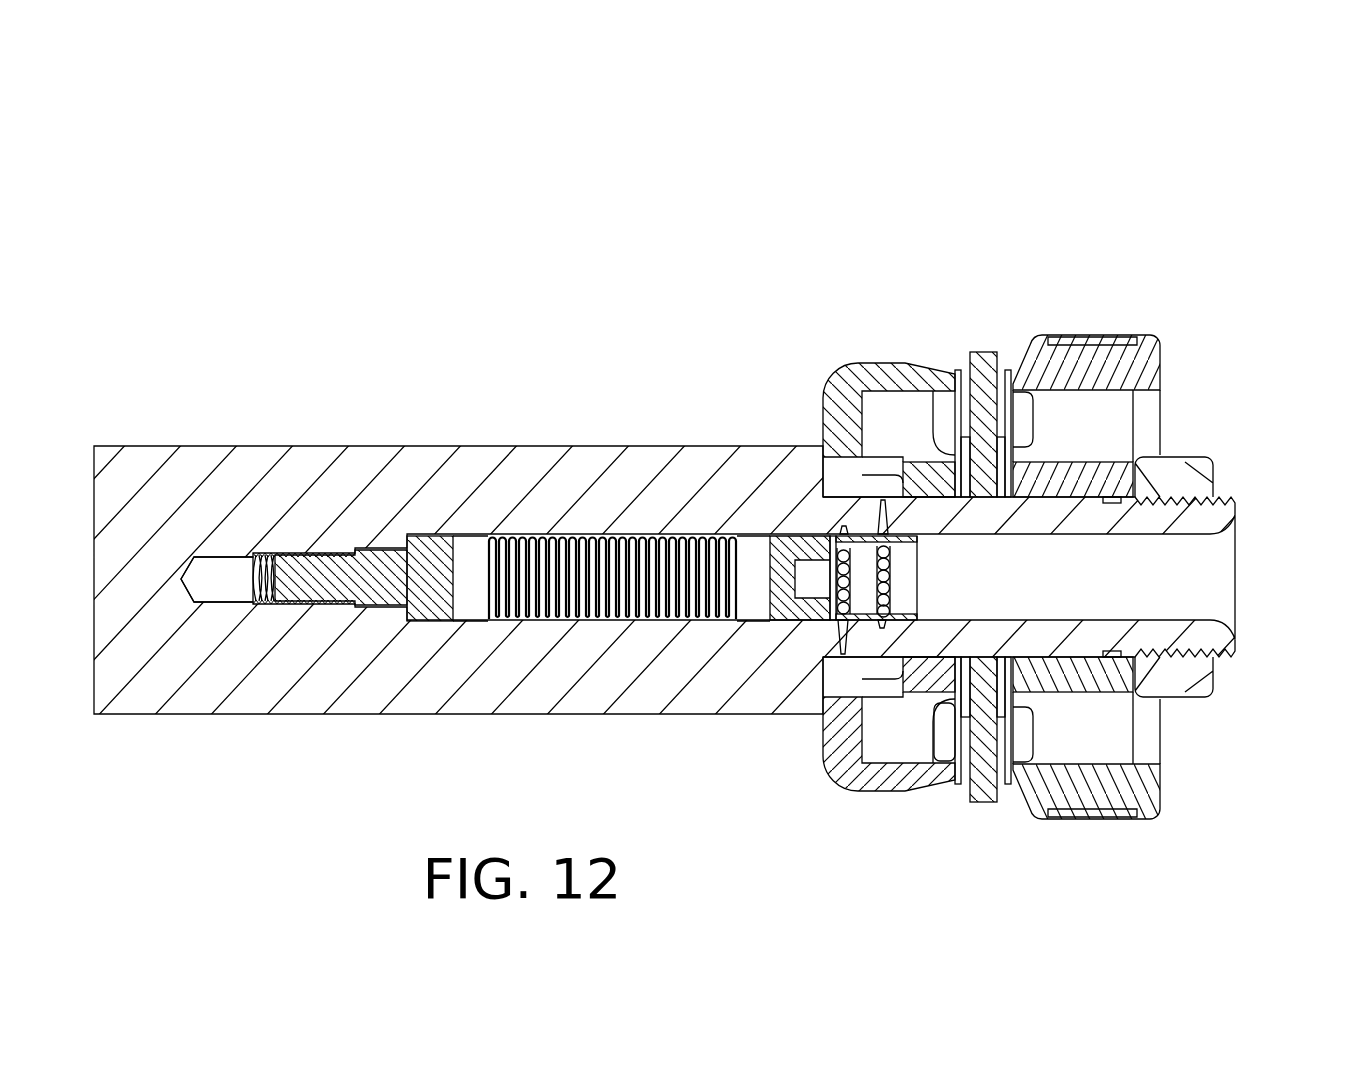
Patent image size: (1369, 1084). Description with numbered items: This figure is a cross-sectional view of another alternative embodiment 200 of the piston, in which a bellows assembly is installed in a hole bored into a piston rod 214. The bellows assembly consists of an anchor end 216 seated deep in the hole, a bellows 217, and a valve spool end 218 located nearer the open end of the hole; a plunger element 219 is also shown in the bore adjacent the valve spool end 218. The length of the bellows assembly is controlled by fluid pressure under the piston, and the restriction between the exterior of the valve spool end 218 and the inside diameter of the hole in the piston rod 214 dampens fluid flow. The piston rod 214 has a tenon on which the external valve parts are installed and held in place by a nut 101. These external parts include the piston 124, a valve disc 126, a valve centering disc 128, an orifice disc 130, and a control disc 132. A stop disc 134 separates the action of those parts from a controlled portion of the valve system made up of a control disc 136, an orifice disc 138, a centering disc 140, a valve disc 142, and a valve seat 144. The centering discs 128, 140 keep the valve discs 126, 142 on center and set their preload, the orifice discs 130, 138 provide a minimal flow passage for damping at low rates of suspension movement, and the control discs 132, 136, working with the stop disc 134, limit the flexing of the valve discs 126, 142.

The alternative embodiment of the piston 200 is at (301, 280).
The piston rod 214 is at (405, 445).
The anchor end 216 is at (390, 607).
The bellows 217 is at (623, 620).
The valve spool end 218 is at (768, 622).
The plunger 219 is at (833, 560).
The valve seat 144 is at (842, 362).
The valve disc 142 is at (953, 362).
The stop disc 134 is at (982, 352).
The valve disc 126 is at (1012, 362).
The valve centering disc 128 is at (1006, 446).
The orifice disc 130 is at (1012, 458).
The piston 124 is at (1155, 335).
The nut 101 is at (1220, 462).
The centering disc 140 is at (955, 708).
The orifice disc 138 is at (944, 782).
The control disc 136 is at (965, 800).
The control disc 132 is at (1010, 800).